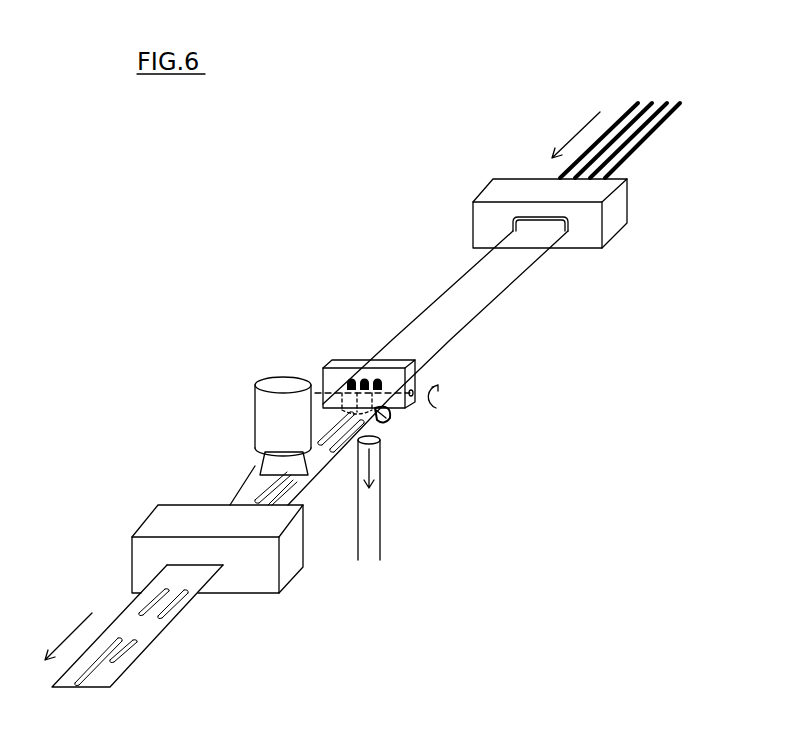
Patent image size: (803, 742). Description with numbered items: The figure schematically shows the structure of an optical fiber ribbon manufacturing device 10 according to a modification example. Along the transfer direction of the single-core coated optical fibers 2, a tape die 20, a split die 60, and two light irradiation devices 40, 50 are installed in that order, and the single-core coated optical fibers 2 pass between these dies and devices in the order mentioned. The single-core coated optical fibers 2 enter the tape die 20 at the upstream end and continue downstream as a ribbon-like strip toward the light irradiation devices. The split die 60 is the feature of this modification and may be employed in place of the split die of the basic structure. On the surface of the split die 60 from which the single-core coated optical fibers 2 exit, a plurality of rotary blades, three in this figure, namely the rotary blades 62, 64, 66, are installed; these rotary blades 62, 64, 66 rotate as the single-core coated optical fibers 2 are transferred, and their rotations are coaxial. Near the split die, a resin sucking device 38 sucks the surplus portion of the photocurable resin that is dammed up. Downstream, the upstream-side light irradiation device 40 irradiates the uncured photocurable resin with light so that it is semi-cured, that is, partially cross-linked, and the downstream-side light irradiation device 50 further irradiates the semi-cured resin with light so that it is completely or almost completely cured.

The optical fiber ribbon manufacturing device 10 is at (143, 174).
The single-core coated optical fibers 2 is at (652, 138).
The tape die 20 is at (620, 232).
The downstream-side light irradiation device 50 is at (160, 522).
The upstream-side light irradiation device 40 is at (275, 381).
The split die 60 is at (413, 378).
The rotary blade 62 is at (340, 398).
The rotary blade 64 is at (382, 421).
The rotary blade 66 is at (390, 412).
The resin sucking device 38 is at (379, 522).